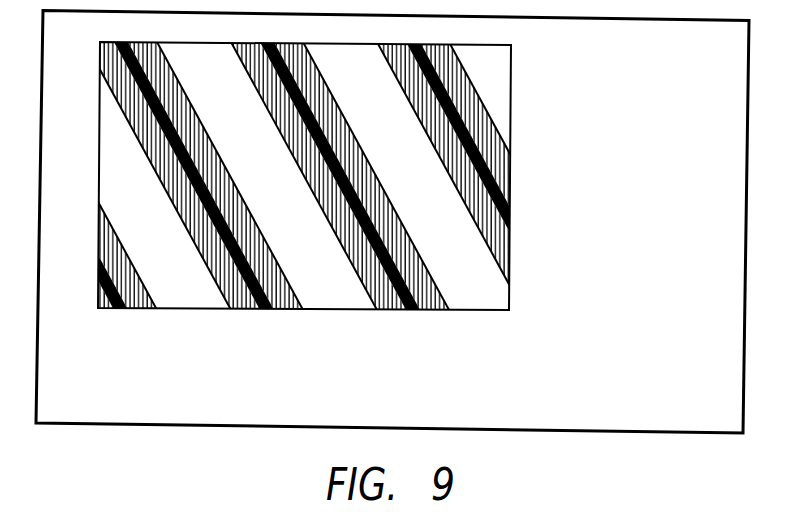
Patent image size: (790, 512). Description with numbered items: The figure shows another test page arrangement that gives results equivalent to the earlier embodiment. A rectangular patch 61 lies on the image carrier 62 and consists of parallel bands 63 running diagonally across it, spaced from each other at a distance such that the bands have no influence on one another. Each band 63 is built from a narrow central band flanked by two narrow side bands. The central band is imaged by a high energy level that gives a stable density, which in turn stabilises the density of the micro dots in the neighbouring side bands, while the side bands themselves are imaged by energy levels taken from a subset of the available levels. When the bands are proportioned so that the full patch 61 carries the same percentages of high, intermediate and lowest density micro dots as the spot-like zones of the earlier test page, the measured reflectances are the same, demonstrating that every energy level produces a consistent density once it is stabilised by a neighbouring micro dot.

The patch 61 is at (180, 308).
The image carrier 62 is at (295, 425).
The parallel band 63 is at (202, 127).